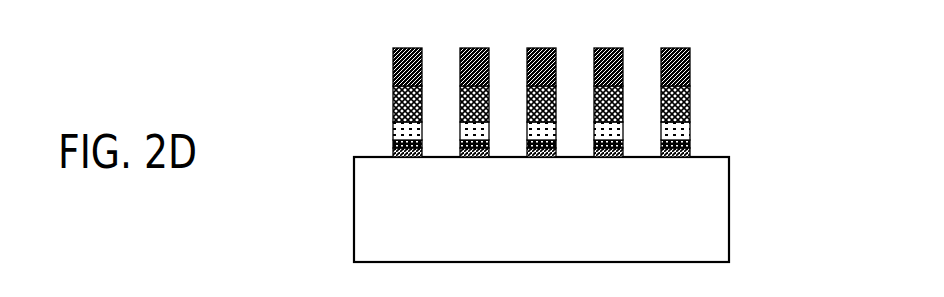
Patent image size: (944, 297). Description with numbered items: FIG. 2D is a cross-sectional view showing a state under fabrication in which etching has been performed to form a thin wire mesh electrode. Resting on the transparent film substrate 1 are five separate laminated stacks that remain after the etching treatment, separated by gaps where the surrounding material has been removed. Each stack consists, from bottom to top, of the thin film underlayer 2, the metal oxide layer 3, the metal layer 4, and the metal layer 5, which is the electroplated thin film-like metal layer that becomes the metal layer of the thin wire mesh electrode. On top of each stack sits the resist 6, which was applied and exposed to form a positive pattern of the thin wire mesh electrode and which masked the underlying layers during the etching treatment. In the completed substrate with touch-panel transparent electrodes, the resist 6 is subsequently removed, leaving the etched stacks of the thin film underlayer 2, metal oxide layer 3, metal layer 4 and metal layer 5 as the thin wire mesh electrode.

The substrate 1 is at (717, 212).
The thin film underlayer 2 is at (702, 158).
The metal oxide layer 3 is at (690, 147).
The metal layer 4 is at (690, 132).
The metal layer 5 is at (690, 100).
The resist 6 is at (690, 72).